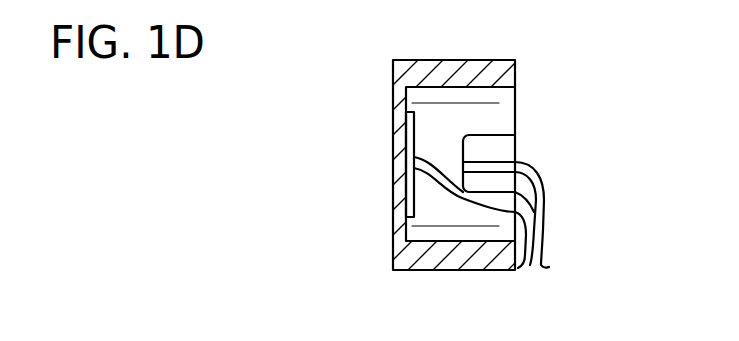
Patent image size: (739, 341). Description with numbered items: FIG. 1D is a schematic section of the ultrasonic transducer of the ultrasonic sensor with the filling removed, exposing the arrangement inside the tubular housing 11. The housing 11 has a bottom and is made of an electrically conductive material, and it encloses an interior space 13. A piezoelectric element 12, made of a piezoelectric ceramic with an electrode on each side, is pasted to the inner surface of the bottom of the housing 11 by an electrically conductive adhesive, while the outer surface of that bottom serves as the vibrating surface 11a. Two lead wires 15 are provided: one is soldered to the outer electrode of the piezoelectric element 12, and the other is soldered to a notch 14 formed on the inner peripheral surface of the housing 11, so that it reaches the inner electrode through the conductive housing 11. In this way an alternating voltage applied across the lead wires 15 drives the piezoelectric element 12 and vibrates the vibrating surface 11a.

The housing 11 is at (427, 78).
The vibrating surface 11a is at (404, 133).
The piezoelectric element 12 is at (416, 204).
The interior space 13 is at (487, 115).
The notch 14 is at (505, 146).
The lead wires 15 is at (541, 233).